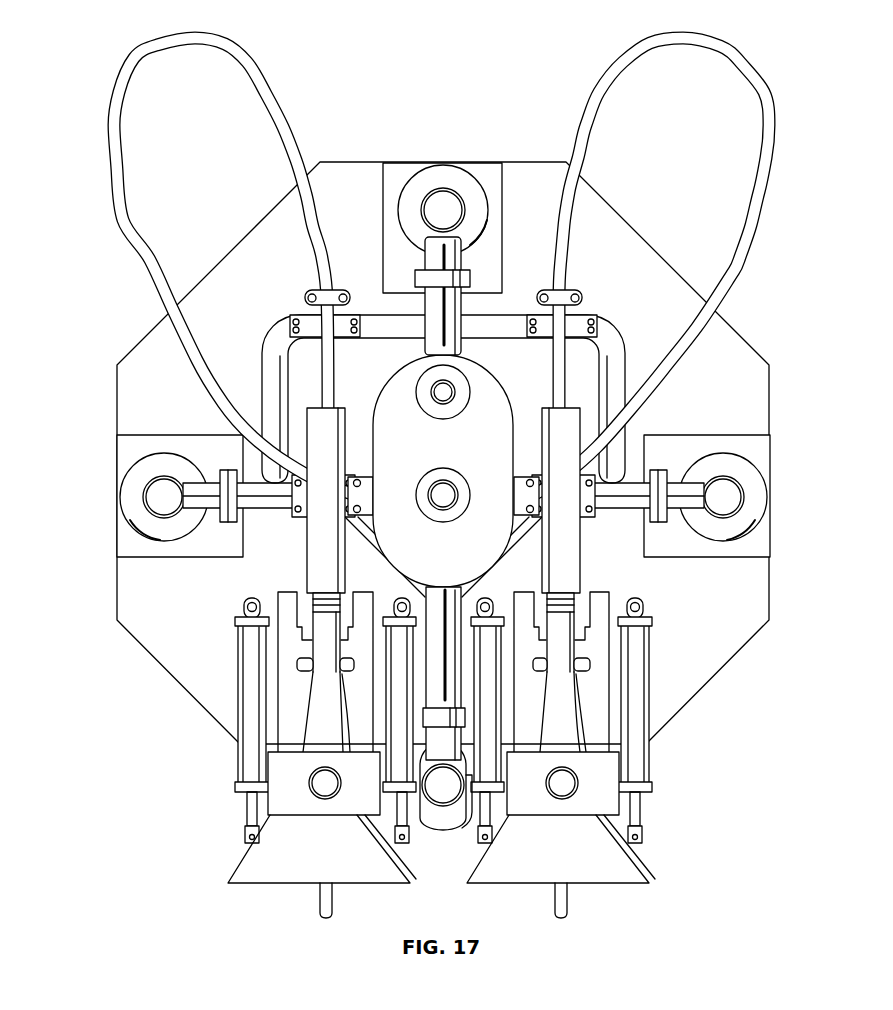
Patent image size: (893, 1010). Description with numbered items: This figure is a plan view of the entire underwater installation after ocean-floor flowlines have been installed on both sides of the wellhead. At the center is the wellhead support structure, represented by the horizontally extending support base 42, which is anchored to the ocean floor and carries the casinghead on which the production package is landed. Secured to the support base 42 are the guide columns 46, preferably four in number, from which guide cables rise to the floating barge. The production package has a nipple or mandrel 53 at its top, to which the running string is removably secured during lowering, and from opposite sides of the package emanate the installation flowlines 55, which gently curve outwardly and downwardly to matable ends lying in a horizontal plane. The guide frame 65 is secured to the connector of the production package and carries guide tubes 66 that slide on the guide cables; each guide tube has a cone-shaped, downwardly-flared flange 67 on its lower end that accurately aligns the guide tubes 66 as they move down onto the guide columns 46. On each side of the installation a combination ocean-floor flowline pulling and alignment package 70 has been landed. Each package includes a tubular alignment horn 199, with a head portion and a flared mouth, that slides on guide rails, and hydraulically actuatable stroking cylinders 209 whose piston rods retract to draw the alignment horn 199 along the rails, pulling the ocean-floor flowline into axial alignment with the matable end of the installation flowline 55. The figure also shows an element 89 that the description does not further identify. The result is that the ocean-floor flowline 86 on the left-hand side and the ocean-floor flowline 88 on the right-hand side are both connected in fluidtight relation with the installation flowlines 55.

The support base 42 is at (268, 274).
The guide columns 46 is at (433, 220).
The nipple or mandrel 53 is at (437, 512).
The installation flowline 55 is at (258, 49).
The guide frame 65 is at (270, 333).
The guide tubes 66 is at (439, 186).
The cone-shaped downwardly-flared flange 67 is at (457, 182).
The combination ocean-floor flowline pulling and alignment package 70 is at (254, 767).
The ocean-floor flowline 86 is at (333, 903).
The ocean-floor flowline 88 is at (568, 903).
The support bracket 89 is at (280, 698).
The tubular alignment horn 199 is at (310, 845).
The hydraulically actuatable stroking cylinder 209 is at (242, 650).